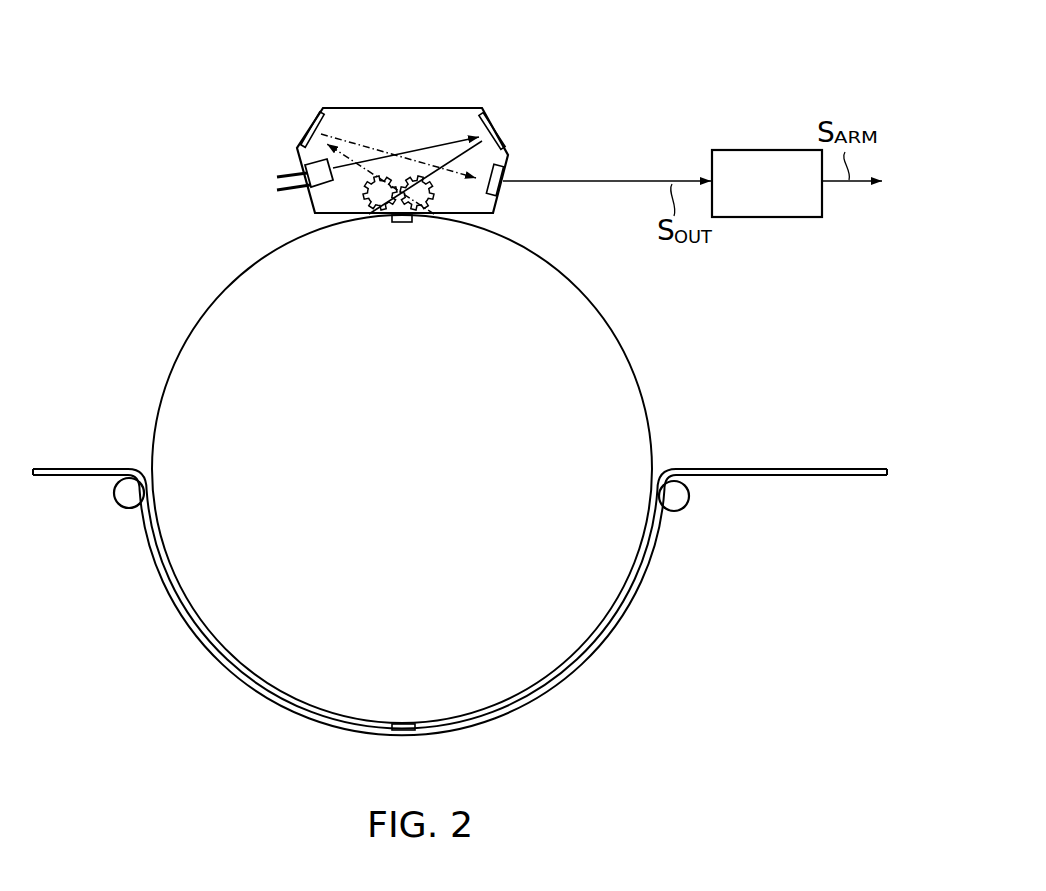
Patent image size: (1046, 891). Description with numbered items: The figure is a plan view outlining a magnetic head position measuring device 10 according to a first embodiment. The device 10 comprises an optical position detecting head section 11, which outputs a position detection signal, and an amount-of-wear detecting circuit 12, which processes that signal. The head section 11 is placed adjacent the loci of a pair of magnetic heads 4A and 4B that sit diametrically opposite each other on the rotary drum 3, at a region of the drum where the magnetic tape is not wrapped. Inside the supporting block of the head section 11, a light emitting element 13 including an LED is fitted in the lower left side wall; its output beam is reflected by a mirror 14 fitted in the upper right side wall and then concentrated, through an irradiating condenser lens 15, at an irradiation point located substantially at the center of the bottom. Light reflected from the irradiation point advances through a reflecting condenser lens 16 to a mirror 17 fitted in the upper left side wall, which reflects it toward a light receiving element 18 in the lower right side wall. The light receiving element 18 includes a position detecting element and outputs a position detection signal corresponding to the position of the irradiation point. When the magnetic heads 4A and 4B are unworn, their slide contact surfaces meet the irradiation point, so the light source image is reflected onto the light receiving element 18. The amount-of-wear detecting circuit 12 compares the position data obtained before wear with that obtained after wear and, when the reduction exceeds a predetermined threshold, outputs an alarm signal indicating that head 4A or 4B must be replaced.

The rotary drum 3 is at (621, 346).
The magnetic head 4A is at (400, 224).
The magnetic head 4B is at (411, 725).
The magnetic head position measuring device 10 is at (615, 56).
The optical position detecting head section 11 is at (356, 107).
The amount-of-wear detecting circuit 12 is at (785, 150).
The light emitting element 13 is at (296, 153).
The mirror 14 is at (488, 119).
The irradiating condenser lens 15 is at (428, 216).
The reflecting condenser lens 16 is at (361, 216).
The mirror 17 is at (316, 121).
The light receiving element 18 is at (509, 160).